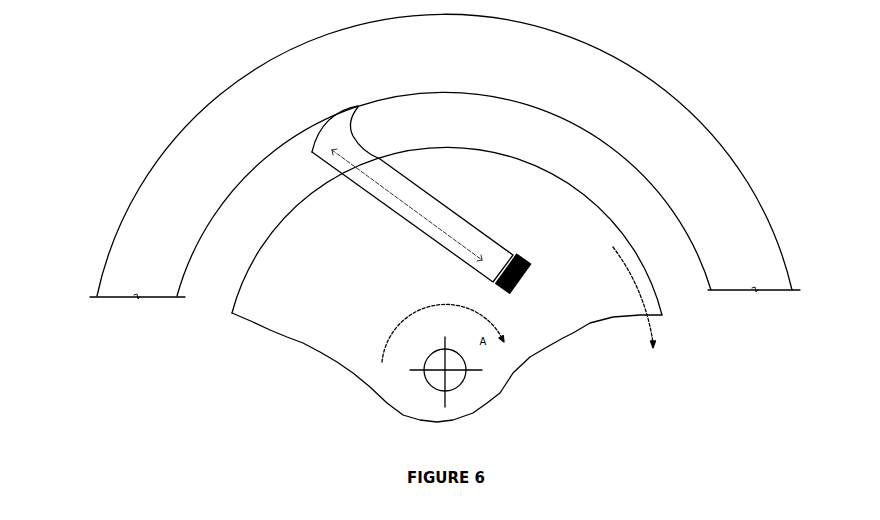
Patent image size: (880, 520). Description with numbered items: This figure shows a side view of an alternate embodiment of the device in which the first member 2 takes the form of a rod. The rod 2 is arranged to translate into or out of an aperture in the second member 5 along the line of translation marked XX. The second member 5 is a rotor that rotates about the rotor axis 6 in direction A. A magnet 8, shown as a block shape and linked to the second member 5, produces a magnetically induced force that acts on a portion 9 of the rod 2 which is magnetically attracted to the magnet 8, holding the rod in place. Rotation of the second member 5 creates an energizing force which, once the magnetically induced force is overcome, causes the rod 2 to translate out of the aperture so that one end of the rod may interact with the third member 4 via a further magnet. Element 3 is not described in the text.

The first member 2 is at (511, 125).
The inner arc wall 3 is at (238, 232).
The third member 4 is at (280, 125).
The second member 5 is at (363, 348).
The rotor axis 6 is at (467, 375).
The magnet 8 is at (520, 291).
The portion 9 is at (503, 263).